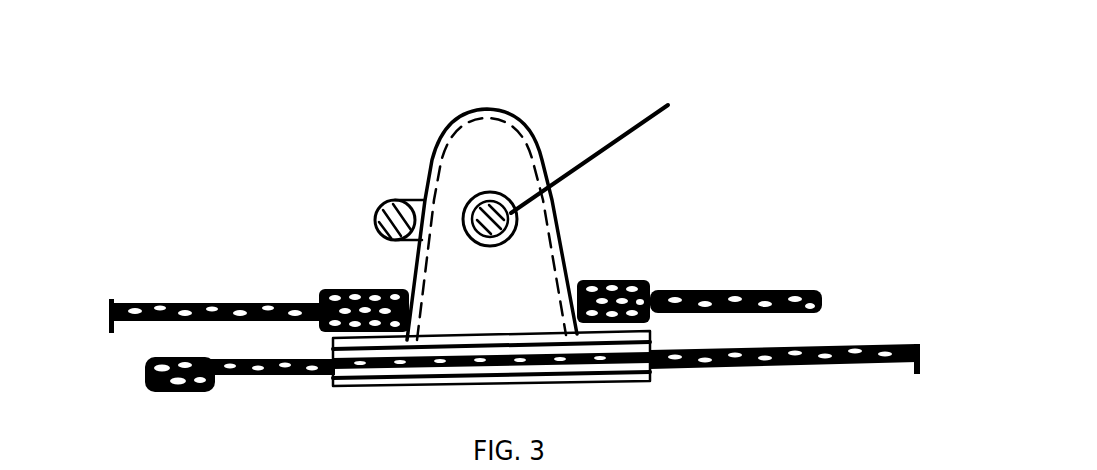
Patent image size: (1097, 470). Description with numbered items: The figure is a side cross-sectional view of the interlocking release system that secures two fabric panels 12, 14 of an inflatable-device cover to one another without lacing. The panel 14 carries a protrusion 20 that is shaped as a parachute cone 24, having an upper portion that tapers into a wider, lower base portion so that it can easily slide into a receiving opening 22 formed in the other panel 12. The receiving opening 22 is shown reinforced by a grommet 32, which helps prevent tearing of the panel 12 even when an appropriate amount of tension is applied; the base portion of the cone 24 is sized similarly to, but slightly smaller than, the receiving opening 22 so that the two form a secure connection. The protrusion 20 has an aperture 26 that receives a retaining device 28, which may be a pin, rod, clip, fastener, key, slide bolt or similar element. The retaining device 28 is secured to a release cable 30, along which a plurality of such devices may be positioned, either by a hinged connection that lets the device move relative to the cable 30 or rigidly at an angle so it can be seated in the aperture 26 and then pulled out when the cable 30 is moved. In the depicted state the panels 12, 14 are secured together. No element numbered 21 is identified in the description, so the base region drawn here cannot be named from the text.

The panel 12 is at (108, 300).
The panel 14 is at (918, 345).
The protrusion 20 is at (406, 183).
The base plate 21 is at (491, 358).
The receiving opening 22 is at (412, 284).
The parachute cone 24 is at (490, 160).
The aperture 26 is at (517, 226).
The retaining device 28 is at (609, 153).
The release cable 30 is at (377, 208).
The grommet 32 is at (320, 287).